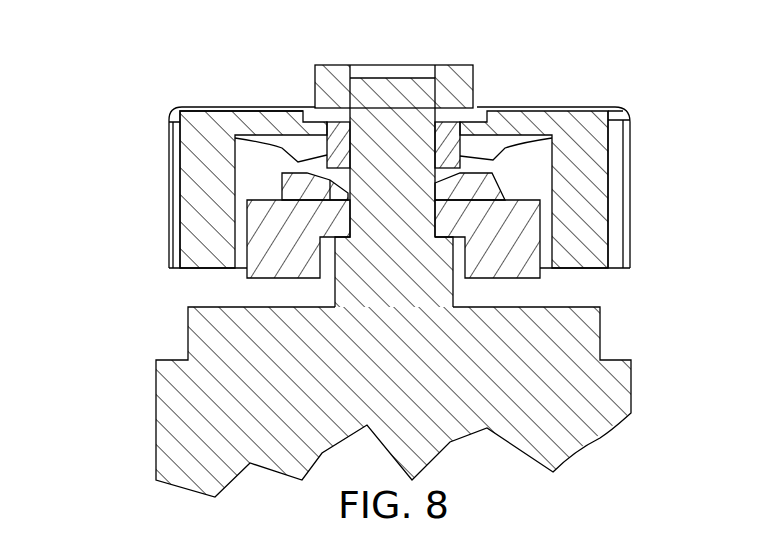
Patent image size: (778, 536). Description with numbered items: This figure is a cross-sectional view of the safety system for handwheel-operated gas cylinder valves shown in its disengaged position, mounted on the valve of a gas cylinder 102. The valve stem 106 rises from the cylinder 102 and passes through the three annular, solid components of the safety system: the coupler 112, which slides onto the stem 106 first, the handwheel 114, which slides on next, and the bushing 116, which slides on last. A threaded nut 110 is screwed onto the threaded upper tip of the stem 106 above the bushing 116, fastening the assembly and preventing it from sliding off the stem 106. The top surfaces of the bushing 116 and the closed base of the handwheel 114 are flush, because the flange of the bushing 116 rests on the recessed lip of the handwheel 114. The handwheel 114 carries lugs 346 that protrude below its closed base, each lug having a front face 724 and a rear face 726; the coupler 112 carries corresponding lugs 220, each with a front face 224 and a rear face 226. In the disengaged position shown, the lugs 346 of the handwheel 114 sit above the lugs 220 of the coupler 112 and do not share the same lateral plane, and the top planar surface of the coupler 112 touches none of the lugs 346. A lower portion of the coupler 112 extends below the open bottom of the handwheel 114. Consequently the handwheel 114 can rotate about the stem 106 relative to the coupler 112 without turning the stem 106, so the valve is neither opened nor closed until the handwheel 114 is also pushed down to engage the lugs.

The gas cylinder 102 is at (156, 403).
The stem 106 is at (373, 90).
The threaded nut 110 is at (447, 117).
The coupler 112 is at (518, 240).
The handwheel 114 is at (167, 138).
The bushing 116 is at (445, 115).
The lugs of the coupler 220 is at (440, 183).
The front face 224 is at (298, 187).
The rear face 226 is at (495, 214).
The lugs of the handwheel 346 is at (228, 131).
The front face of the handwheel lug 724 is at (475, 148).
The rear face of the handwheel lug 726 is at (307, 143).